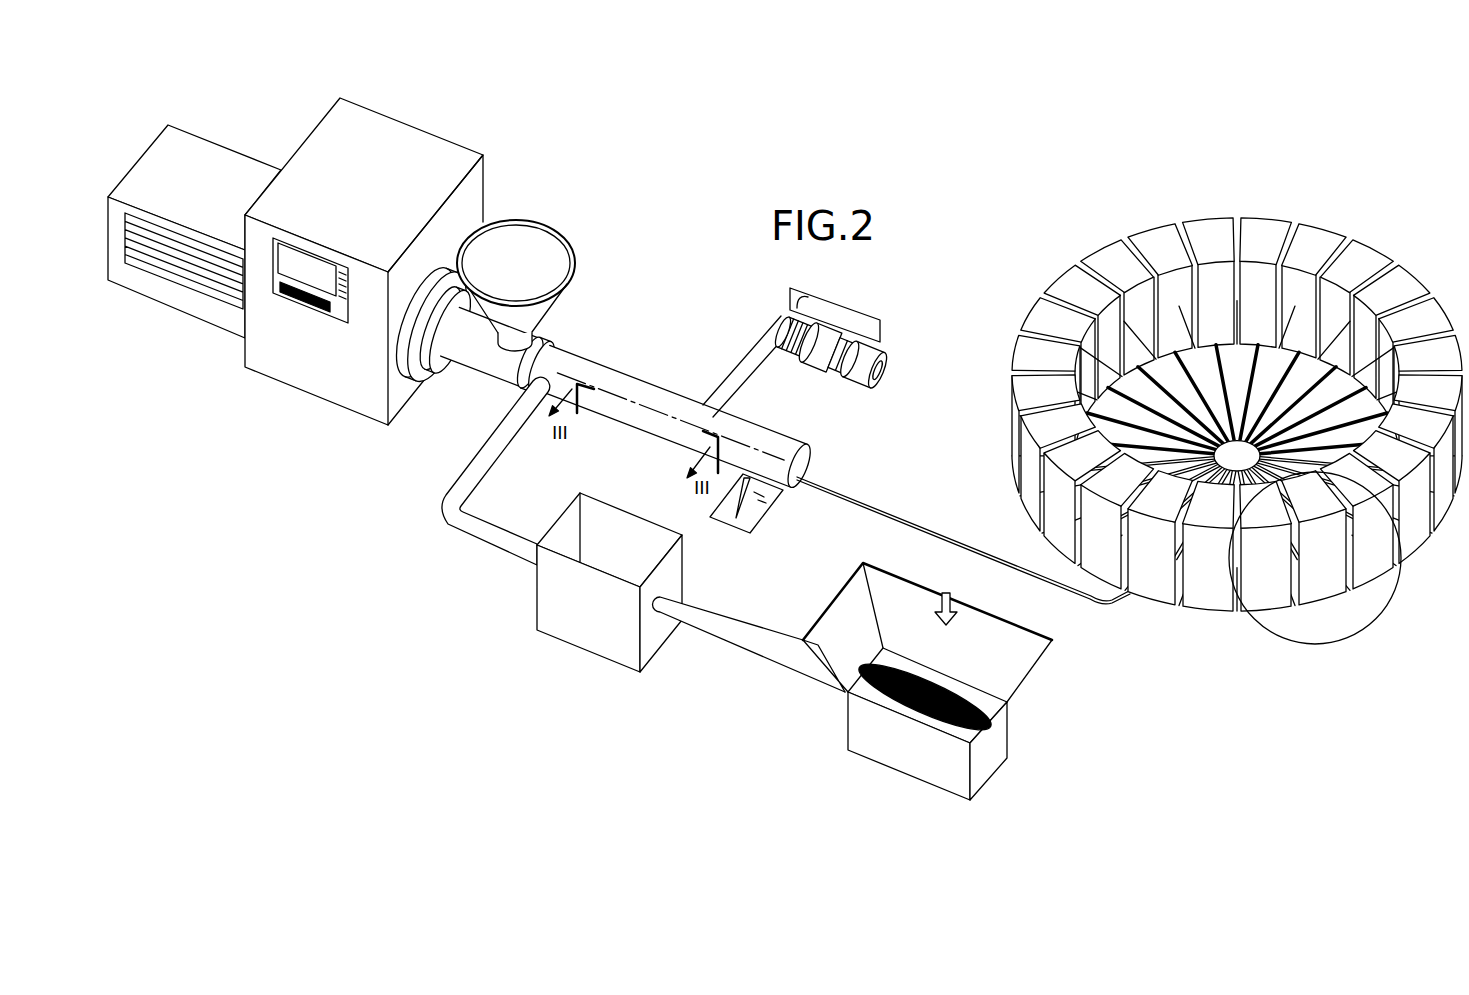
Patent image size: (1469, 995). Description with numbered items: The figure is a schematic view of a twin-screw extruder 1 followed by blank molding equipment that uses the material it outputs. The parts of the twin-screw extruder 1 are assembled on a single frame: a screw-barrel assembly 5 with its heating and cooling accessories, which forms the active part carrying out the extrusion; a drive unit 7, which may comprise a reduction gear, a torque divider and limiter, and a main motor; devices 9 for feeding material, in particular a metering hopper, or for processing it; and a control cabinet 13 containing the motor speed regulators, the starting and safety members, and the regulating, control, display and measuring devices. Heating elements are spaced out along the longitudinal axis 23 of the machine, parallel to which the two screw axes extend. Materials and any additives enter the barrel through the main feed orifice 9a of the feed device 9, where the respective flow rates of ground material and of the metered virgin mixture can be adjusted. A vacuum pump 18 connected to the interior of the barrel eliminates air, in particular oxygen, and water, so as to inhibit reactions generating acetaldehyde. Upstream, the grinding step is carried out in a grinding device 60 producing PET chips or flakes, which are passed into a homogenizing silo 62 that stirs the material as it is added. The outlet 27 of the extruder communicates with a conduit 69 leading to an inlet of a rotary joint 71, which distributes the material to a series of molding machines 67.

The twin-screw extruder 1 is at (758, 405).
The screw-barrel assembly 5 is at (603, 377).
The drive unit 7 is at (210, 170).
The feed device 9 is at (533, 268).
The main feed orifice 9a is at (510, 240).
The control cabinet 13 is at (408, 150).
The vacuum pump 18 is at (867, 317).
The longitudinal axis 23 is at (660, 413).
The outlet 27 is at (807, 462).
The grinding device 60 is at (1013, 667).
The homogenizing silo 62 is at (585, 627).
The molding machines 67 is at (1237, 419).
The conduit 69 is at (916, 524).
The rotary joint 71 is at (1237, 456).